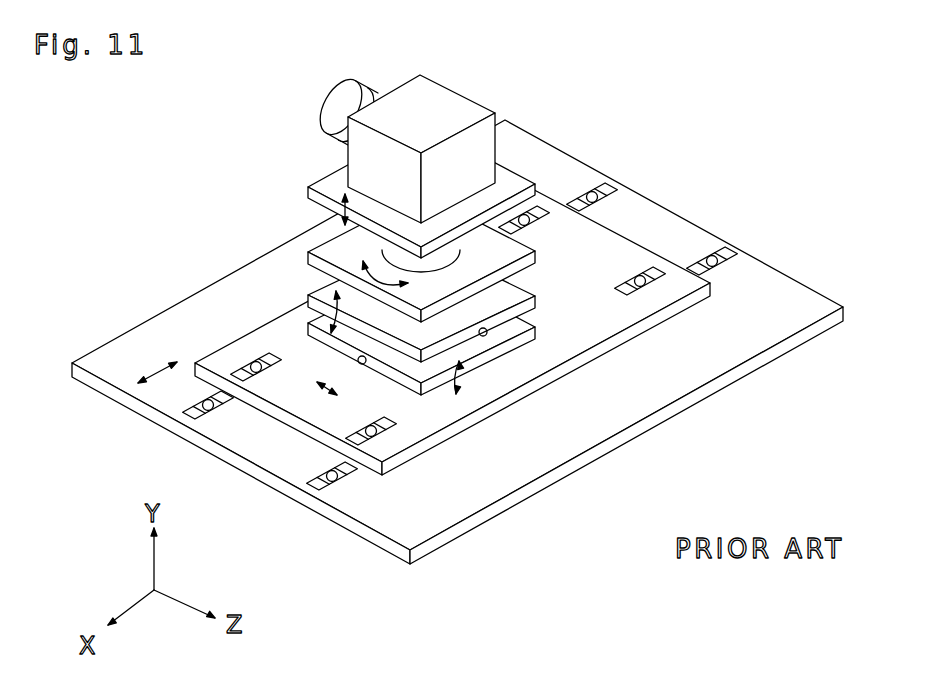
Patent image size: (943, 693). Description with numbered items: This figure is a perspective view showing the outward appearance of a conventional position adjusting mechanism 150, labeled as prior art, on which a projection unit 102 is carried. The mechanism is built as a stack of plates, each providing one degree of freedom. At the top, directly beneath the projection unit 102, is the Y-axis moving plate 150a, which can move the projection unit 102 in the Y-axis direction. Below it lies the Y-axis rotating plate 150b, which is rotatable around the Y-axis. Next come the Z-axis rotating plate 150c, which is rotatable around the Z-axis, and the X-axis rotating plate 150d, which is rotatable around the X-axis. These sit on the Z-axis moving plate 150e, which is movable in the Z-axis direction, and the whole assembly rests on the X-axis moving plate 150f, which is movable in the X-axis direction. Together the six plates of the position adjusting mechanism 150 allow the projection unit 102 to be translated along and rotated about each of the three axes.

The projection unit 102 is at (497, 105).
The position adjusting mechanism 150 is at (110, 128).
The Y-axis moving plate 150a is at (325, 177).
The Y-axis rotating plate 150b is at (313, 262).
The Z-axis rotating plate 150c is at (333, 307).
The X-axis rotating plate 150d is at (308, 322).
The Z-axis moving plate 150e is at (250, 332).
The X-axis moving plate 150f is at (195, 297).